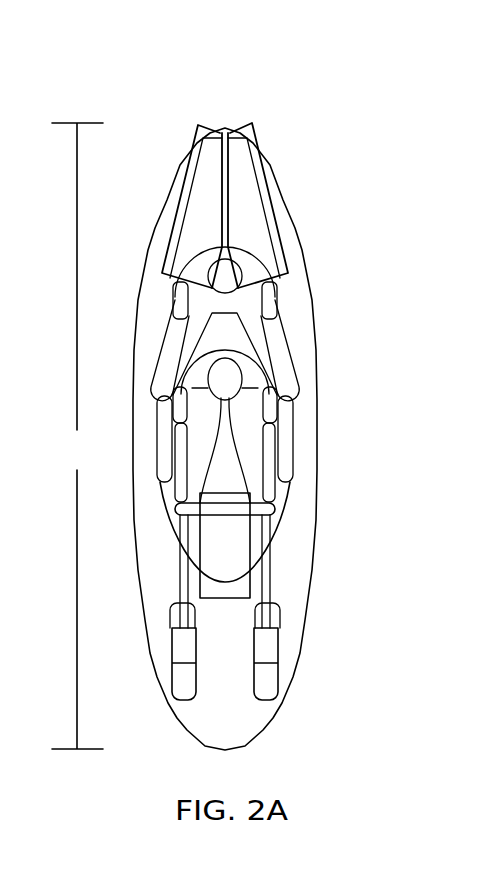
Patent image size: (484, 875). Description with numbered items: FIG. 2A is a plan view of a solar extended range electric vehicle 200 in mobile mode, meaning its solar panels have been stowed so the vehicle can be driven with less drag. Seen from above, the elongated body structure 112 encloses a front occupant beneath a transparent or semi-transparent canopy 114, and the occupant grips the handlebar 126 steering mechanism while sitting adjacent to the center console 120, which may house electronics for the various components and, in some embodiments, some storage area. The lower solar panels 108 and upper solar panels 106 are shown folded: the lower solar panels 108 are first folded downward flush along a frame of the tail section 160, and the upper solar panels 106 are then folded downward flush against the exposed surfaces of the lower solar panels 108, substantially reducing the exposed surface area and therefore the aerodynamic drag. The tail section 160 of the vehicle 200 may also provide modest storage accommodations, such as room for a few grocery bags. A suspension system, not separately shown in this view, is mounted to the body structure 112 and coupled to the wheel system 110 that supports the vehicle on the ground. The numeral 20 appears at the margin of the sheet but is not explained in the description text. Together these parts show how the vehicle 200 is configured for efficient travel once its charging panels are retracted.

The solar extended range electric vehicle 200 is at (243, 78).
The upper solar panels 106 is at (203, 200).
The lower solar panels 108 is at (253, 133).
The body structure 112 is at (307, 432).
The handlebar 126 is at (257, 508).
The canopy 114 is at (267, 522).
The center console 120 is at (240, 590).
The wheel system 110 is at (280, 677).
The tail section 160 is at (156, 158).
The reference 20 is at (473, 754).